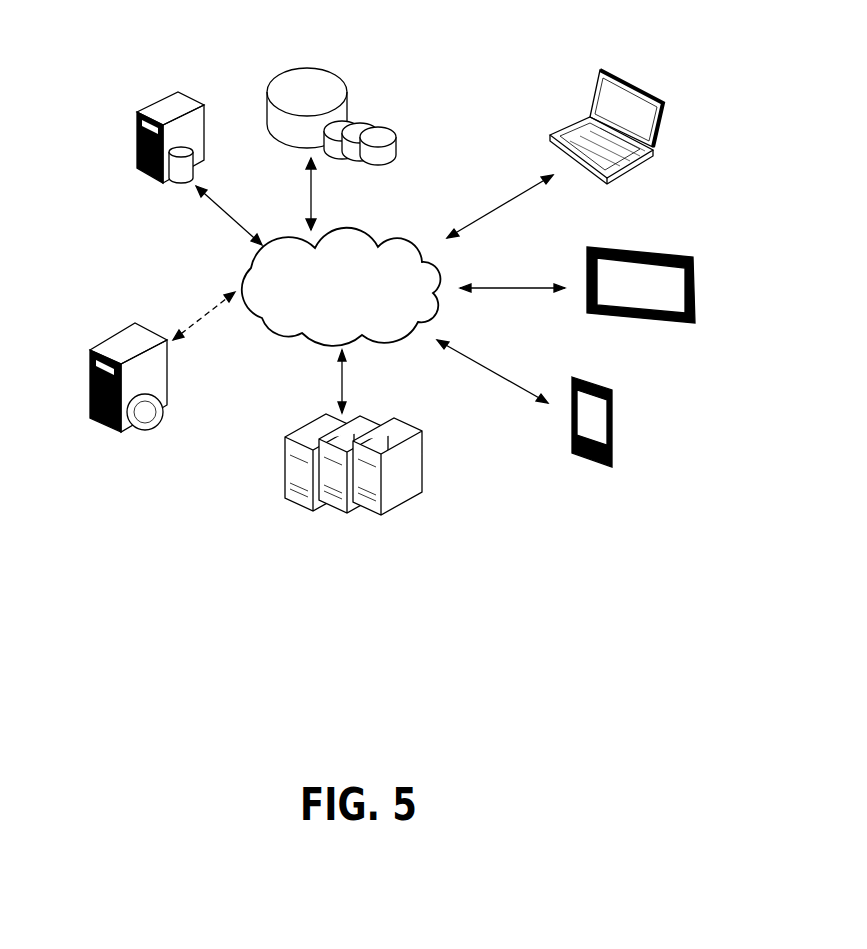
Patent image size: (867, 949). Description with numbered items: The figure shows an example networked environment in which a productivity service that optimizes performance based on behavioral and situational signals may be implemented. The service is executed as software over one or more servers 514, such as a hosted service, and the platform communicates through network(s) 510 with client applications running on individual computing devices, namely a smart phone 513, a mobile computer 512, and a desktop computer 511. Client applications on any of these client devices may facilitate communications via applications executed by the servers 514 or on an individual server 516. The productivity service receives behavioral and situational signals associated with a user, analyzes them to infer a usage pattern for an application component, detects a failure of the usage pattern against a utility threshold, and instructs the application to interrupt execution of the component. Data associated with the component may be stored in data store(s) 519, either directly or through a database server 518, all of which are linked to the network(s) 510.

The network(s) 510 is at (343, 218).
The desktop computer 511 is at (641, 70).
The mobile computer 512 is at (671, 230).
The smart phone 513 is at (621, 390).
The servers 514 is at (310, 418).
The individual server 516 is at (110, 332).
The database server 518 is at (172, 192).
The data store(s) 519 is at (321, 48).